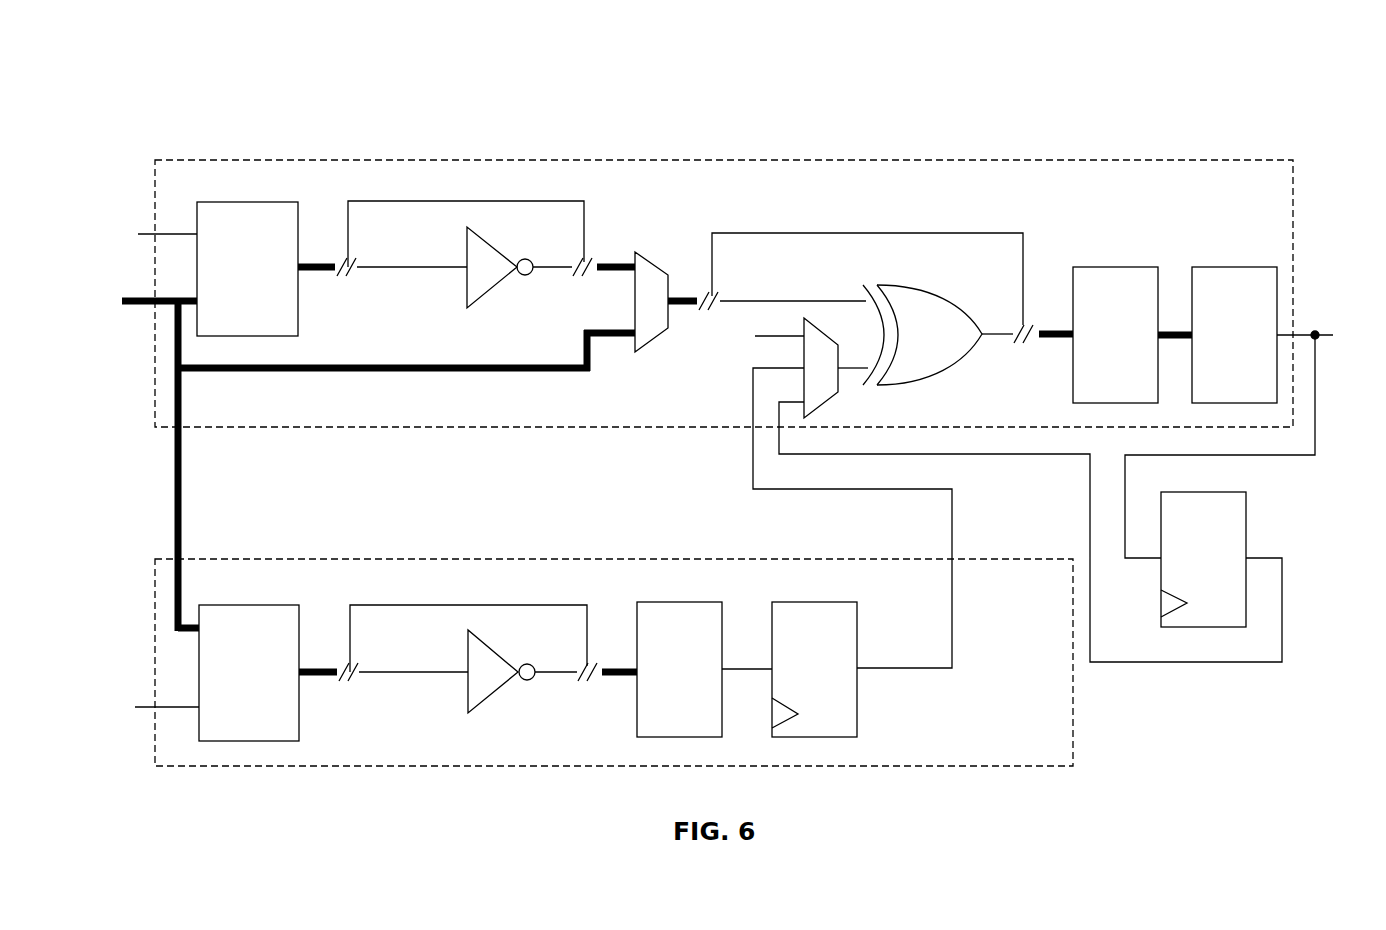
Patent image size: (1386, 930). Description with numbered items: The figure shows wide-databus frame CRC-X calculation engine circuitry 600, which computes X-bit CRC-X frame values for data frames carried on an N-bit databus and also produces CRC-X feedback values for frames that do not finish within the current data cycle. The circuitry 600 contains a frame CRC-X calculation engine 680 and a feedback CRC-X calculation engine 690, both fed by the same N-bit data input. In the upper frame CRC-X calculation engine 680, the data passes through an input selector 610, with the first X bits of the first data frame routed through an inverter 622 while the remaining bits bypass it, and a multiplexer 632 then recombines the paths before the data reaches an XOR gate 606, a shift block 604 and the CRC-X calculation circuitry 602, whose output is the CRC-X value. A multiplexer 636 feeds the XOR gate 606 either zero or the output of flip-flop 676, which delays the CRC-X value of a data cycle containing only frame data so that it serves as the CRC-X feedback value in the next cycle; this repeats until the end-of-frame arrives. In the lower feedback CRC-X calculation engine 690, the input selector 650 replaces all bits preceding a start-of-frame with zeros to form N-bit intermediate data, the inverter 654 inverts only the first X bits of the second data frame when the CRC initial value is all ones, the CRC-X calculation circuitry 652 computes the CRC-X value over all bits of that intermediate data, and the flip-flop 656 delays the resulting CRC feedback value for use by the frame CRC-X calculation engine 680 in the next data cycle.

The wide-databus frame CRC-X calculation engine circuitry 600 is at (1180, 86).
The CRC-X calculation circuitry 602 is at (1218, 360).
The SHIFT block 604 is at (1099, 360).
The XOR gate 606 is at (952, 361).
The SELECT block (first data frame) 610 is at (231, 292).
The inverter 622 is at (483, 285).
The multiplexer 632 is at (648, 268).
The multiplexer 636 is at (827, 378).
The input selector 650 is at (233, 697).
The CRC-X calculation circuitry 652 is at (664, 695).
The inverter 654 is at (490, 685).
The flip-flop 656 is at (799, 695).
The flip-flop 676 is at (1187, 585).
The frame CRC-X calculation engine 680 is at (1285, 191).
The feedback CRC-X calculation engine 690 is at (1063, 591).